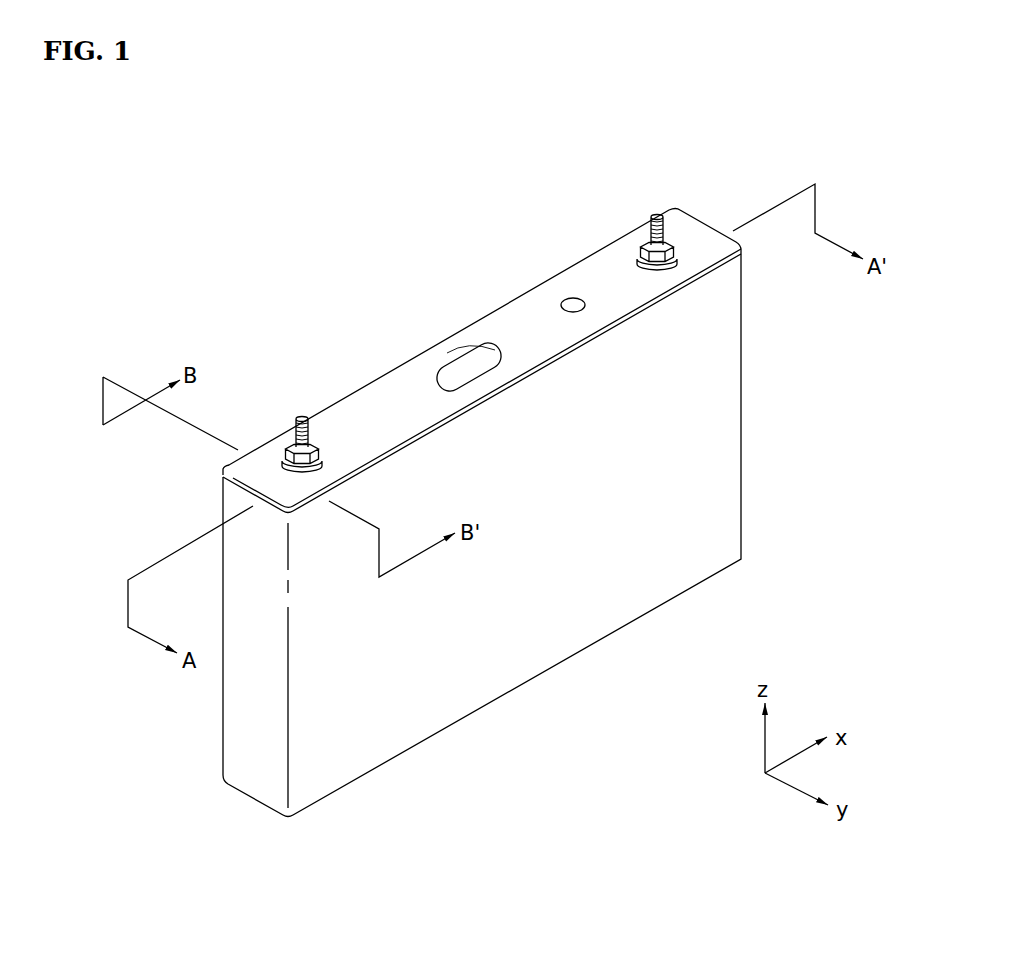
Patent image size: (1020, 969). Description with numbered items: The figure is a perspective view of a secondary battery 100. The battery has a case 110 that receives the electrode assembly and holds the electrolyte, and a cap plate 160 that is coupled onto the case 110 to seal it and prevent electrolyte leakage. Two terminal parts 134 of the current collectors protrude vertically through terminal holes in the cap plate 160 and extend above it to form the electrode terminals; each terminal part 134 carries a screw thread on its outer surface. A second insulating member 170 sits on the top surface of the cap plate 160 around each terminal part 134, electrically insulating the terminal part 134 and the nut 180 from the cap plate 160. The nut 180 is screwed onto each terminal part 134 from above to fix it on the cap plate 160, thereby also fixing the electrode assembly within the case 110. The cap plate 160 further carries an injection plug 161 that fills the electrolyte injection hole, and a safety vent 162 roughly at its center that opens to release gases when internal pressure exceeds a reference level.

The secondary battery 100 is at (159, 203).
The case 110 is at (552, 655).
The terminal part 134 is at (300, 419).
The cap plate 160 is at (386, 372).
The injection plug 161 is at (571, 298).
The safety vent 162 is at (457, 361).
The second insulating member 170 is at (282, 459).
The nut 180 is at (283, 453).